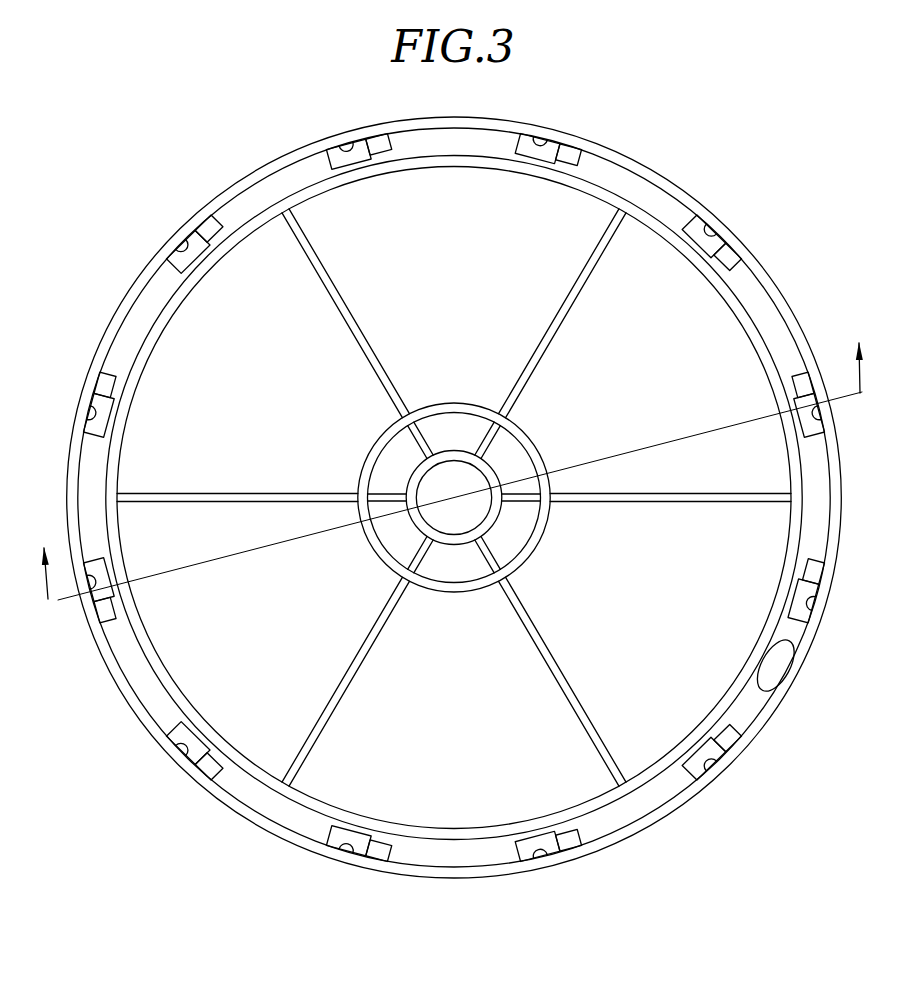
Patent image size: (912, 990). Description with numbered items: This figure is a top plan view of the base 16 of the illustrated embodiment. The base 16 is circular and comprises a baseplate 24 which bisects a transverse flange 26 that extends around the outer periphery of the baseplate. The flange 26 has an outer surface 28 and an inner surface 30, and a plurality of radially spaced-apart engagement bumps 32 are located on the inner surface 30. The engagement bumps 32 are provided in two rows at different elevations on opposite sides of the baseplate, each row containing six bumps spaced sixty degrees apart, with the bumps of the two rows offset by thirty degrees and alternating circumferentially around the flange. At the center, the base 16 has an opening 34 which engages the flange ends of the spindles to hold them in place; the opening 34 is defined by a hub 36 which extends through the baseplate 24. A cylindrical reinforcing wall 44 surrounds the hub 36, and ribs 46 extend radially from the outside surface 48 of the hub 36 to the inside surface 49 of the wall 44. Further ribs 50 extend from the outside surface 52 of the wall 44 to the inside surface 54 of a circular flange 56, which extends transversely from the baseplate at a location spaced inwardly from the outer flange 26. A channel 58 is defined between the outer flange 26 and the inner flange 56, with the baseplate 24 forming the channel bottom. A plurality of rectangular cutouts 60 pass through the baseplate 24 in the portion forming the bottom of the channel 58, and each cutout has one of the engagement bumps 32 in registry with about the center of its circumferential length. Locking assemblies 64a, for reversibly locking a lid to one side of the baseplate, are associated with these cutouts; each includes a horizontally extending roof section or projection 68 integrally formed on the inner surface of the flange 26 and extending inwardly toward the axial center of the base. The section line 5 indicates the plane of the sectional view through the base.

The section line 5- 5 is at (445, 451).
The base 16 is at (206, 110).
The baseplate 24 is at (133, 323).
The transverse flange 26 is at (646, 171).
The outer surface 28 is at (773, 282).
The inner surface 30 is at (792, 690).
The engagement bumps 32 is at (342, 146).
The opening 34 is at (435, 492).
The hub 36 is at (514, 536).
The cylindrical reinforcing wall 44 is at (538, 437).
The ribs 46 is at (468, 426).
The outside surface 48 is at (378, 458).
The inside surface 49 is at (382, 548).
The ribs 50 is at (549, 342).
The outside surface 52 is at (448, 405).
The inside surface 54 is at (396, 170).
The circular flange 56 is at (568, 203).
The channel 58 is at (90, 492).
The rectangular cutouts 60 is at (205, 235).
The locking assemblies 64a is at (514, 166).
The roof section or projection 68 is at (579, 150).